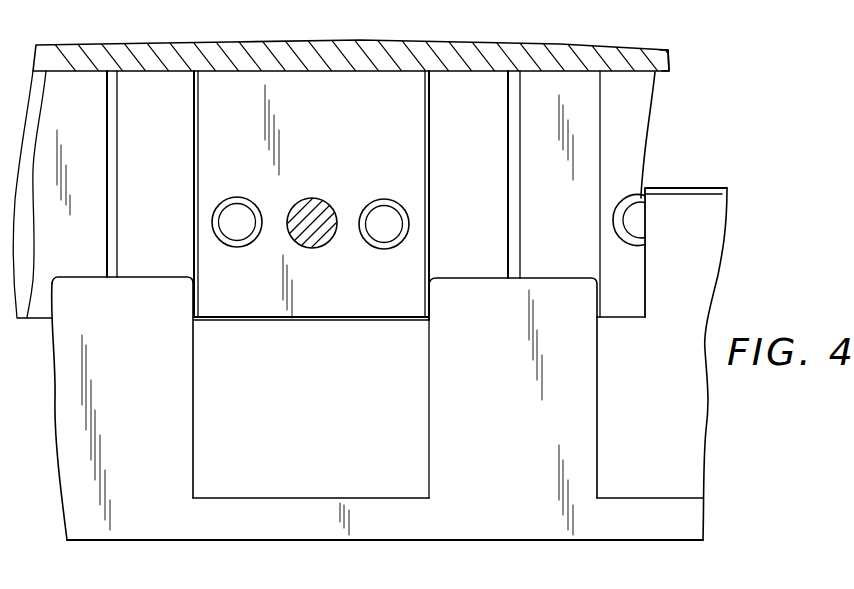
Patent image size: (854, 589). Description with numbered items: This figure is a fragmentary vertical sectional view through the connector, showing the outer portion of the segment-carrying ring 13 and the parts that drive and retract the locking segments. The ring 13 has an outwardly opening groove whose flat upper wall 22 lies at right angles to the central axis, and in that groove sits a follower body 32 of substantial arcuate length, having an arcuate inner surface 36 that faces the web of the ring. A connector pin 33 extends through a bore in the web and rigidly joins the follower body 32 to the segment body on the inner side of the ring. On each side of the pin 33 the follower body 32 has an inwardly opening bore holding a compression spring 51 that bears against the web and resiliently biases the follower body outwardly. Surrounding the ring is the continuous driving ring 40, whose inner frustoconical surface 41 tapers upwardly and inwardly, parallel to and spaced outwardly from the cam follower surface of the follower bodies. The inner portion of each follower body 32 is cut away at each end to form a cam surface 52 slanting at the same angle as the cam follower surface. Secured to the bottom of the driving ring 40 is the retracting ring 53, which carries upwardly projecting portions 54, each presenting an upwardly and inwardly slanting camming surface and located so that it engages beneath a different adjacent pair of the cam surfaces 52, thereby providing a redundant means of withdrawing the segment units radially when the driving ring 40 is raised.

The segment-carrying ring 13 is at (513, 43).
The upper wall of groove 18 22 is at (660, 66).
The follower body 32 is at (646, 149).
The connector pin 33 is at (303, 200).
The arcuate inner surface 36 is at (320, 135).
The driving ring 40 is at (684, 186).
The inner frustoconical surface 41 is at (320, 409).
The compression spring 51 is at (229, 209).
The cam surface 52 is at (82, 259).
The retracting ring 53 is at (332, 467).
The upwardly projecting portion 54 is at (133, 404).